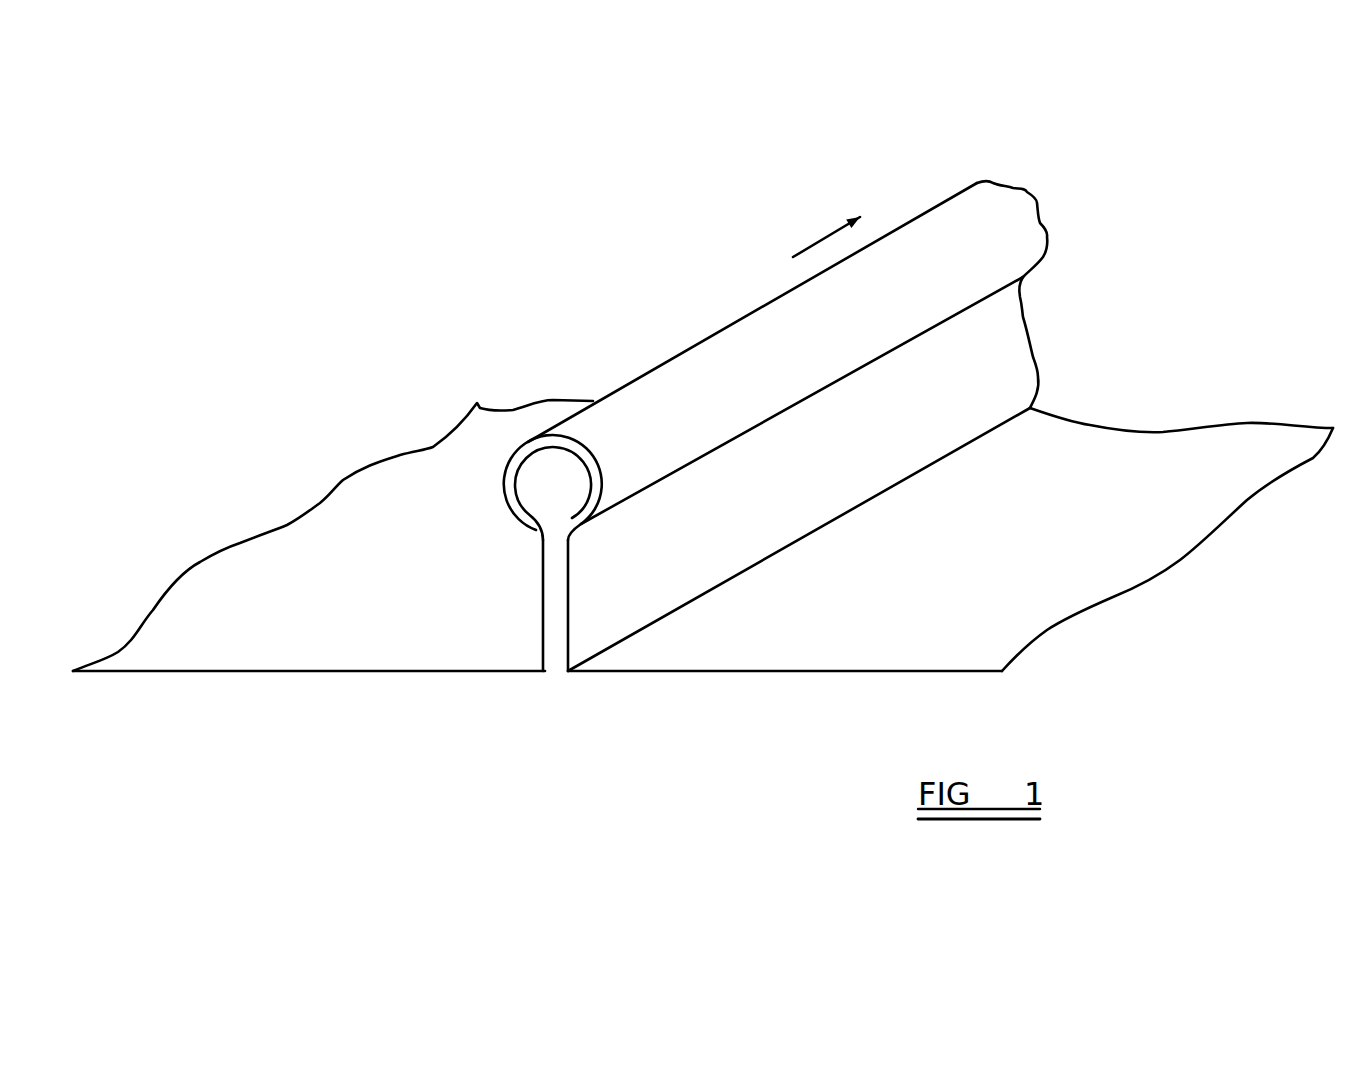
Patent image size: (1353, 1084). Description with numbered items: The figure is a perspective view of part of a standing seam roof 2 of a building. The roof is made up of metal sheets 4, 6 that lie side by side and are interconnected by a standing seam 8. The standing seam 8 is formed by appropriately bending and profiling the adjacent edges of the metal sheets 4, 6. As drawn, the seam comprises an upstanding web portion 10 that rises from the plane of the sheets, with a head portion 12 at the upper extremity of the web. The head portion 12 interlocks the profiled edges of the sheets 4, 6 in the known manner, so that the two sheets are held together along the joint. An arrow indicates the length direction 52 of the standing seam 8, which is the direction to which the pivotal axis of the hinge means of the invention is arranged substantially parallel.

The standing seam roof 2 is at (775, 467).
The metal sheet 4 is at (397, 622).
The metal sheet 6 is at (815, 603).
The standing seam 8 is at (1040, 370).
The upstanding web portion 10 is at (565, 613).
The head portion 12 is at (647, 433).
The length direction 52 is at (815, 240).